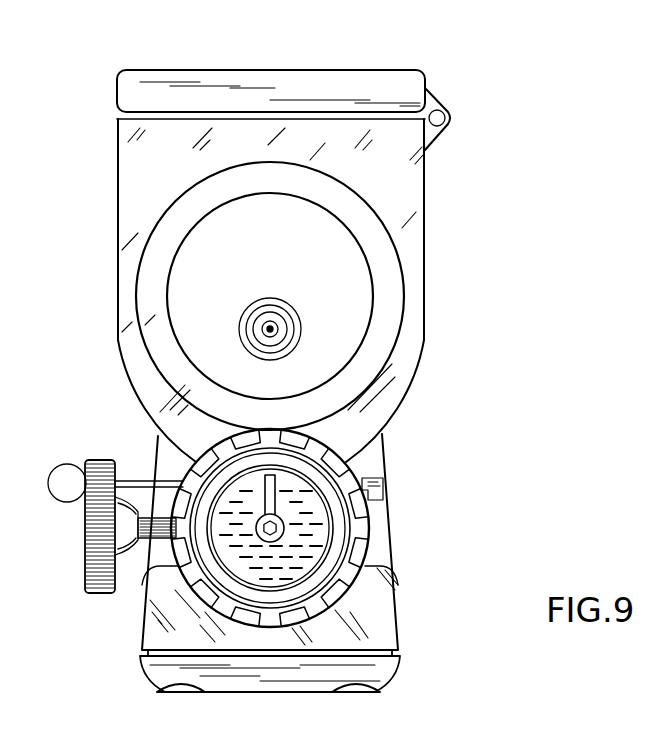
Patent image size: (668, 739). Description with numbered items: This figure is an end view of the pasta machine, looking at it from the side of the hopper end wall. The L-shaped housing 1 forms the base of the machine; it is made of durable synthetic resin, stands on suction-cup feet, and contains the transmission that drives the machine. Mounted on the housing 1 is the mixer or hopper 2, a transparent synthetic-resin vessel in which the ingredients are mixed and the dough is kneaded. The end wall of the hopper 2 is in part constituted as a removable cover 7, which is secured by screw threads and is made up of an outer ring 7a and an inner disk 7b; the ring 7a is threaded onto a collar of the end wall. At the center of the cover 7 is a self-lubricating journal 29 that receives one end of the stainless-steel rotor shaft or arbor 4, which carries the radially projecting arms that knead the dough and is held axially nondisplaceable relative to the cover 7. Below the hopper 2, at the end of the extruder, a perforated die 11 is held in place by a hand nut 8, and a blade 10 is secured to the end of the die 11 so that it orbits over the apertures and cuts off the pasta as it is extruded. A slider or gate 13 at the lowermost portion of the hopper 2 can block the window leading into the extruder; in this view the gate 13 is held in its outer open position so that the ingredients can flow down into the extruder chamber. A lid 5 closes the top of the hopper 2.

The housing 1 is at (397, 588).
The hopper 2 is at (408, 193).
The rotor shaft 4 is at (344, 337).
The lid 5 is at (412, 83).
The removable cover 7 is at (307, 280).
The outer ring 7a is at (347, 205).
The inner disk 7b is at (300, 218).
The hand nut 8 is at (290, 626).
The blade 10 is at (283, 503).
The perforated die 11 is at (255, 565).
The gate 13 is at (70, 472).
The journal 29 is at (279, 336).